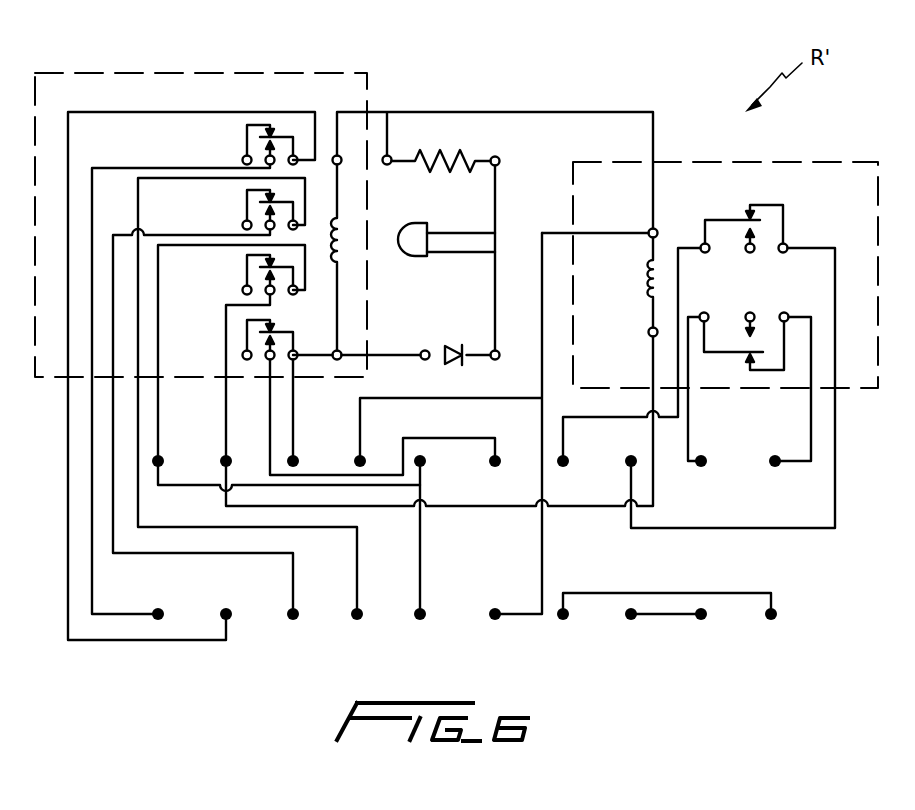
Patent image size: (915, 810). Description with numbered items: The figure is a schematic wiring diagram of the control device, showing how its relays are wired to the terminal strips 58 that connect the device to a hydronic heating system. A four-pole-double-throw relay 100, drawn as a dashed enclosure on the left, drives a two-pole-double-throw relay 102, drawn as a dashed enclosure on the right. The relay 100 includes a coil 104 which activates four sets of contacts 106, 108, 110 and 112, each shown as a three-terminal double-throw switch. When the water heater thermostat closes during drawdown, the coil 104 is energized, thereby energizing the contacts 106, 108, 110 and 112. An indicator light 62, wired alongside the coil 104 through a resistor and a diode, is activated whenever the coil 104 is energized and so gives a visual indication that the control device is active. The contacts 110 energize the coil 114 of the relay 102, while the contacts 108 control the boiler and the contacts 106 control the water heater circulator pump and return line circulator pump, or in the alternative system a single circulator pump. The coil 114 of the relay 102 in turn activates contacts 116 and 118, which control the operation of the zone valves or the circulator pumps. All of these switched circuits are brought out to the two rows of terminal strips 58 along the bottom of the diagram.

The four-pole-double-throw relay 100 is at (204, 73).
The two-pole-double-throw relay 102 is at (815, 162).
The coil 104 is at (343, 236).
The contacts 106 is at (247, 141).
The contacts 108 is at (247, 214).
The contacts 110 is at (253, 275).
The contacts 112 is at (247, 340).
The coil 114 is at (646, 291).
The contacts 116 is at (763, 237).
The contacts 118 is at (766, 312).
The indicator light 62 is at (418, 256).
The terminal strips 58 is at (783, 465).